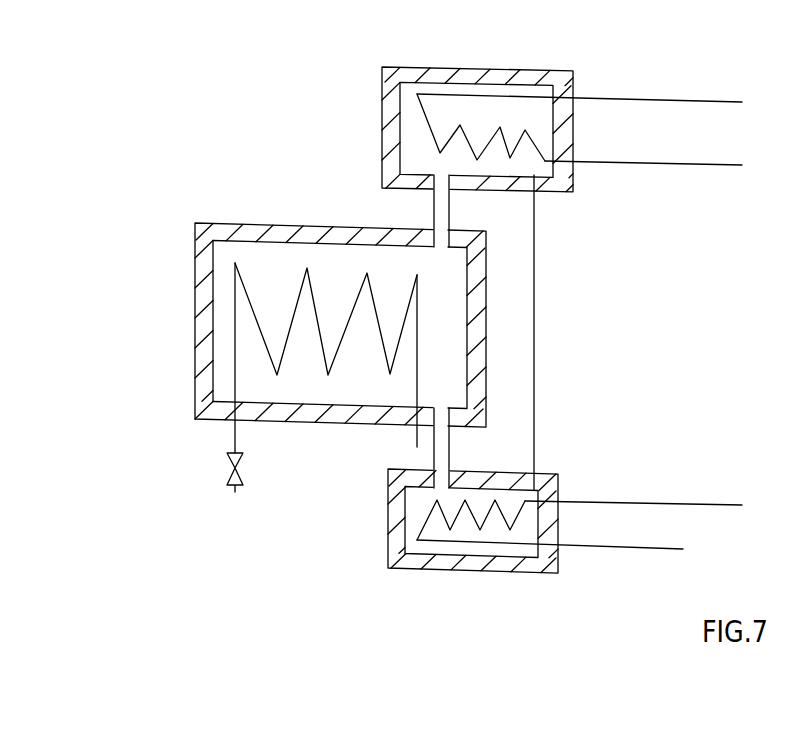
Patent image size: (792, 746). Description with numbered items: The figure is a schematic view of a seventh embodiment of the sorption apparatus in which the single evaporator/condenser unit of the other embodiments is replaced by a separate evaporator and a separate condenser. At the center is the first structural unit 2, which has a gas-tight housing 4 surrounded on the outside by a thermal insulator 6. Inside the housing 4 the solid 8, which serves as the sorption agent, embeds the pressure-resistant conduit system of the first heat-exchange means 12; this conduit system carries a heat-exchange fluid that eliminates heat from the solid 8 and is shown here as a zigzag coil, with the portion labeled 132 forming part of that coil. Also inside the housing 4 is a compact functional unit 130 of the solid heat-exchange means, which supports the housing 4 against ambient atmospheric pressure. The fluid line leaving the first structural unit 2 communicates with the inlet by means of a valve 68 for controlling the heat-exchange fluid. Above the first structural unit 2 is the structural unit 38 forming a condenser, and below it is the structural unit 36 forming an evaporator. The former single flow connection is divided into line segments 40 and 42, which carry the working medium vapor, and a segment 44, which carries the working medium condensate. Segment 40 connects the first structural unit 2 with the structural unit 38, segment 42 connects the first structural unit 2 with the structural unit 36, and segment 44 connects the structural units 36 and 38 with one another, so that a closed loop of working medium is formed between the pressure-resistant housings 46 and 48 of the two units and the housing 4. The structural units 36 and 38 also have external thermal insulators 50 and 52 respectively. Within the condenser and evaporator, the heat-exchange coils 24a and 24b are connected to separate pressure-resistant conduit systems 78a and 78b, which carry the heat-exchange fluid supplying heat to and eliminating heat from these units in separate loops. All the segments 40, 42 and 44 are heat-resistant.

The first structural unit 2 is at (187, 265).
The gas-tight housing 4 is at (210, 298).
The thermal insulator 6 is at (200, 328).
The solid 8 is at (210, 372).
The first heat-exchange means 12 is at (261, 341).
The heat transfer tube 132 is at (263, 372).
The compact functional unit 130 is at (347, 383).
The valve 68 is at (226, 468).
The structural unit forming a condenser 38 is at (417, 62).
The pressure-resistant housing 46 is at (467, 72).
The external thermal insulator 50 is at (550, 74).
The upper heat exchanger coil 24a is at (418, 130).
The pressure-resistant conduit system 78a is at (537, 142).
The line segment 40 is at (450, 210).
The segment 44 is at (535, 322).
The line segment 42 is at (449, 450).
The structural unit forming an evaporator 36 is at (408, 575).
The pressure-resistant housing 48 is at (448, 558).
The external thermal insulator 52 is at (517, 565).
The lower heat exchanger coil 24b is at (418, 520).
The pressure-resistant conduit system 78b is at (513, 520).